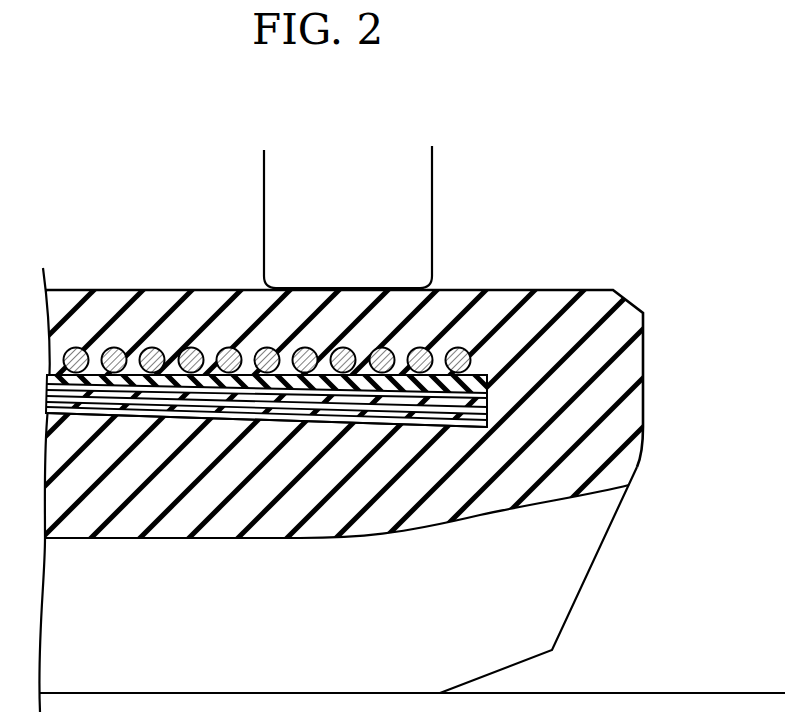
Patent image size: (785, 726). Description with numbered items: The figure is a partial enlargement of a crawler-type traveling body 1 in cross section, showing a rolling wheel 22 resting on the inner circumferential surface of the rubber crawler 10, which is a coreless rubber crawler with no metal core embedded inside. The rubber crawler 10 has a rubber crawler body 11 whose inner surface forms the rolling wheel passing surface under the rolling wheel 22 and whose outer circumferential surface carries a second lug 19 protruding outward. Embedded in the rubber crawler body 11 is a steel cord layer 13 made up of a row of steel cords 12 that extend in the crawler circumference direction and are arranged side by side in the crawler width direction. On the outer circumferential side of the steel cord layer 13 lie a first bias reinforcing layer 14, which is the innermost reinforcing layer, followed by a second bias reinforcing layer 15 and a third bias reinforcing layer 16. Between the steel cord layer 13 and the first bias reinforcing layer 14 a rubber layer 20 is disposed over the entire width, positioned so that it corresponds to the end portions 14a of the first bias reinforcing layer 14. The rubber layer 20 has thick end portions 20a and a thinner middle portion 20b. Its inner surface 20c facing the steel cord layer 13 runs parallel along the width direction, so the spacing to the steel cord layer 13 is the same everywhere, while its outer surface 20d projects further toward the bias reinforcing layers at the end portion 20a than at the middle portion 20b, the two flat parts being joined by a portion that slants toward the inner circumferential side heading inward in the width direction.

The sensor device 1 is at (549, 120).
The rubber crawler 10 is at (546, 253).
The rubber crawler body 11 is at (647, 390).
The steel cords 12 is at (410, 348).
The steel cord layer 13 is at (475, 349).
The first bias reinforcing layer 14 is at (487, 397).
The end portions of the first bias reinforcing layer 14a is at (450, 388).
The second bias reinforcing layer 15 is at (487, 409).
The third bias reinforcing layer 16 is at (487, 425).
The second lug 19 is at (590, 573).
The rubber layer 20 is at (392, 421).
The end portions of the rubber layer 20a is at (440, 378).
The middle portion of the rubber layer 20b is at (135, 378).
The inner surface of the rubber layer 20c is at (286, 375).
The outer surface of the rubber layer 20d is at (353, 396).
The rolling wheel 22 is at (432, 180).